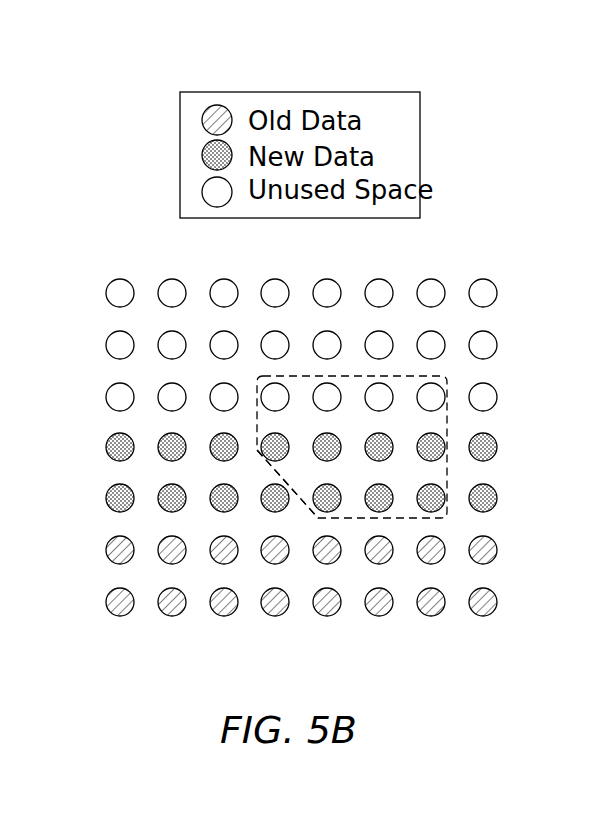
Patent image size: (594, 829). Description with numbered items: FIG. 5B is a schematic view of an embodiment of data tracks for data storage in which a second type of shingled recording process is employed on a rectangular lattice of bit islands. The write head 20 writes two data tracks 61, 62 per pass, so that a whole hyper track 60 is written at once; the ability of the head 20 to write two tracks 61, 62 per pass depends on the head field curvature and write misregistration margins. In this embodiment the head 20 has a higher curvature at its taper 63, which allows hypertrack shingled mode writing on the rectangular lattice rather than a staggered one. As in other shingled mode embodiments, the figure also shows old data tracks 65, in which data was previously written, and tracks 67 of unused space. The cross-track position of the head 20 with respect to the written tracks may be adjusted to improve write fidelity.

The write head 20 is at (447, 428).
The hyper track 60 is at (100, 427).
The data track 61 is at (500, 450).
The data track 62 is at (500, 502).
The taper 63 is at (310, 510).
The old data tracks 65 is at (500, 550).
The tracks of unused space 67 is at (500, 390).